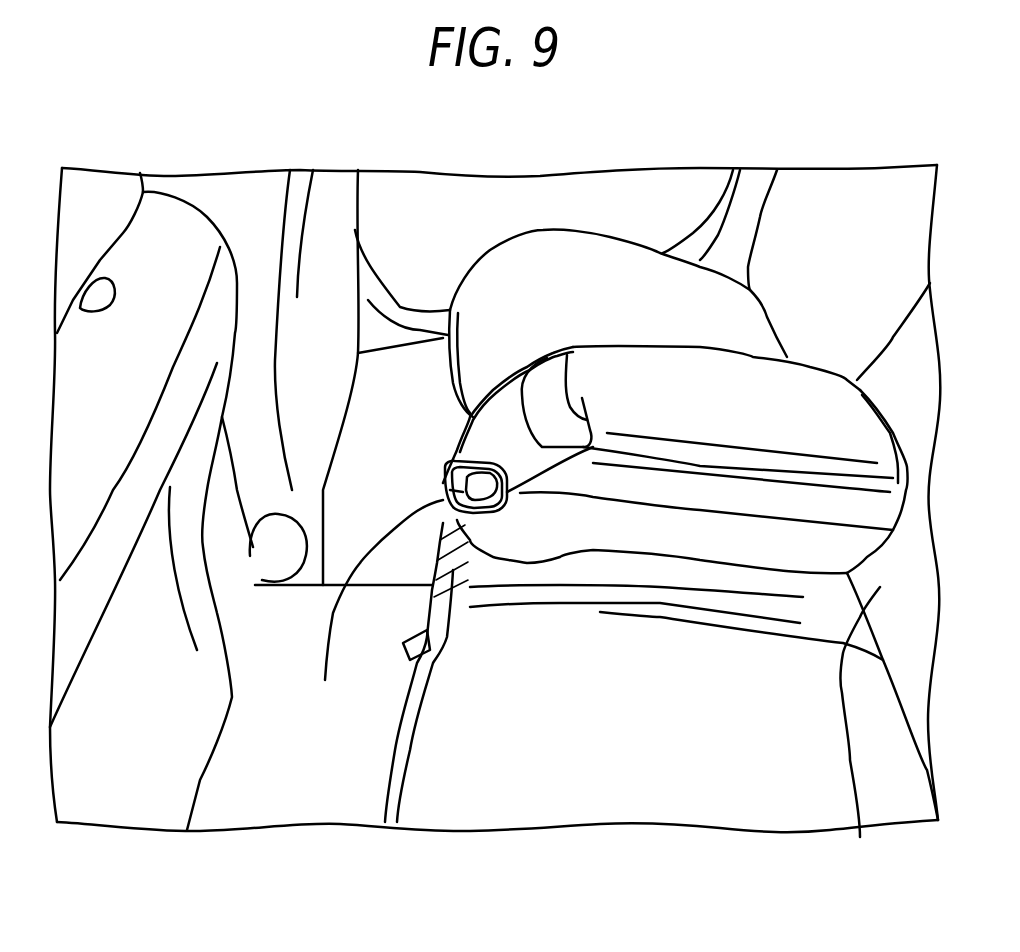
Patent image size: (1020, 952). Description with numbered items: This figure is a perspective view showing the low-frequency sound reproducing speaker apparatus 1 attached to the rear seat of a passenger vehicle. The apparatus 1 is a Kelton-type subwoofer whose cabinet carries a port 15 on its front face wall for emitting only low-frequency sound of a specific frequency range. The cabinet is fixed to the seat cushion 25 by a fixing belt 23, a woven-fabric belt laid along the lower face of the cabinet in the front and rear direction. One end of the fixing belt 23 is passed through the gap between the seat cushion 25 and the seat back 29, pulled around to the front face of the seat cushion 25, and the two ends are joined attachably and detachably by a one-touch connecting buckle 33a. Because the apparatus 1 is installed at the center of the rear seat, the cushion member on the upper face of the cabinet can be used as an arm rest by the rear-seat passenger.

The low-frequency sound reproducing speaker apparatus 1 is at (650, 530).
The port 15 is at (323, 585).
The fixing belt 23 is at (387, 610).
The seat cushion 25 is at (573, 750).
The seat back 29 is at (860, 837).
The connecting buckle 33a is at (470, 527).